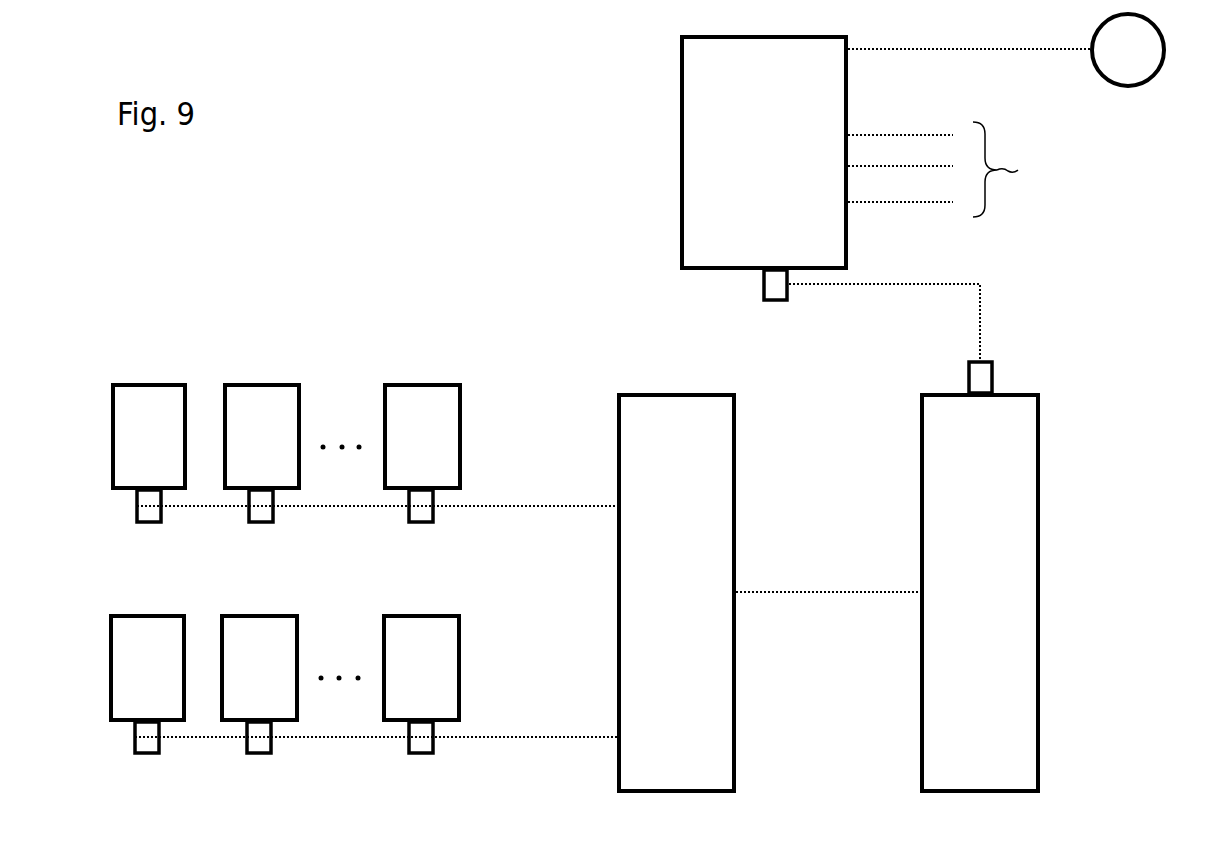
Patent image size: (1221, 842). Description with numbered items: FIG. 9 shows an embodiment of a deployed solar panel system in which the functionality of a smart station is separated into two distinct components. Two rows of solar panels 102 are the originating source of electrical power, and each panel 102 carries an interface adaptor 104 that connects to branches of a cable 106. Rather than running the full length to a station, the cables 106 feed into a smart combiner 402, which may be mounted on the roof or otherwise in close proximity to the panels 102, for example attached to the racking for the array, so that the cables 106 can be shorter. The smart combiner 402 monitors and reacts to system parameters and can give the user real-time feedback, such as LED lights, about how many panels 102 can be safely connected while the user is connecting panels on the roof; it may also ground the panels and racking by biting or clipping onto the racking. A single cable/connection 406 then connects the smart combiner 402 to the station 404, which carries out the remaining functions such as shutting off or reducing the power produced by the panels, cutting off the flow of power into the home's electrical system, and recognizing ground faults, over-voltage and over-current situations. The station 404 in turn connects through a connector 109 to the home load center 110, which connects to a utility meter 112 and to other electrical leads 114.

The solar panel 102 is at (152, 392).
The interface adaptor 104 is at (133, 536).
The cable 106 is at (539, 482).
The connector 109 is at (956, 380).
The home load center 110 is at (673, 133).
The utility meter 112 is at (1153, 94).
The electrical leads 114 is at (978, 169).
The smart combiner 402 is at (647, 409).
The station 404 is at (1019, 438).
The cable/connection 406 is at (837, 574).